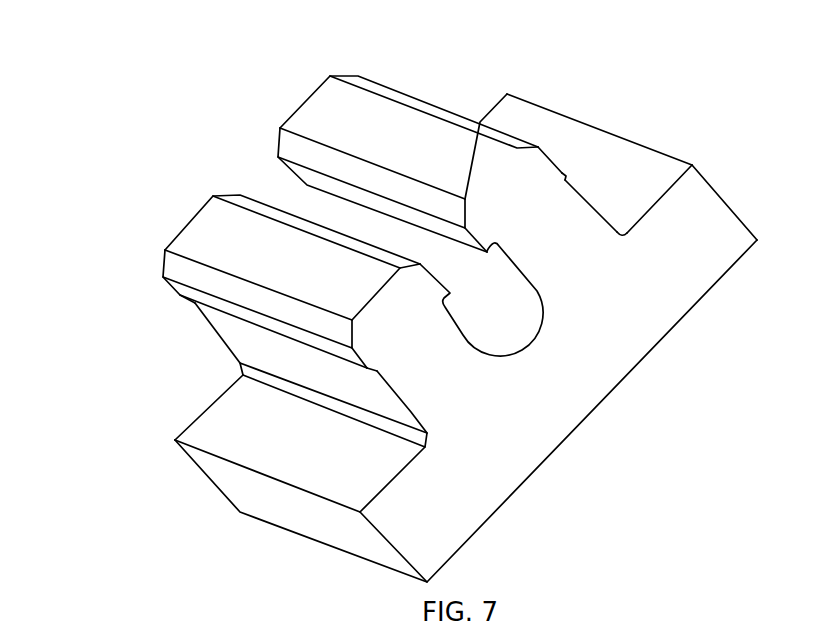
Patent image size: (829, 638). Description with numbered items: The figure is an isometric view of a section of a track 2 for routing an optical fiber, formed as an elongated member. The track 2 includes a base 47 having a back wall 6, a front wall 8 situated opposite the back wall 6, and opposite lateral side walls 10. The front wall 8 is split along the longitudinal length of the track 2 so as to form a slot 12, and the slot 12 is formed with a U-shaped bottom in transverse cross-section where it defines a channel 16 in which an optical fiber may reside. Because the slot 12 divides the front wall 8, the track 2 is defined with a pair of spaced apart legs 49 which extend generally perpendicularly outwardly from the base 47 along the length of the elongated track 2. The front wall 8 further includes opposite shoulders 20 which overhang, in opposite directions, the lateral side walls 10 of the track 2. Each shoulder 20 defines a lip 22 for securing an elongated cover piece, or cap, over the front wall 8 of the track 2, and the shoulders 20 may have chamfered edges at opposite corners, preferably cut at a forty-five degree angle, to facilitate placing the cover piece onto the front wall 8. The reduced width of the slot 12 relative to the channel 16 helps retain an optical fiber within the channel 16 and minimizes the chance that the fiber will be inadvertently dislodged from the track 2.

The track 2 is at (104, 400).
The back wall 6 is at (610, 393).
The front wall 8 is at (310, 108).
The lateral side walls 10 is at (603, 213).
The slot 12 is at (238, 148).
The channel 16 is at (535, 337).
The shoulders 20 is at (555, 158).
The lip 22 is at (563, 177).
The base 47 is at (733, 208).
The legs 49 is at (363, 103).